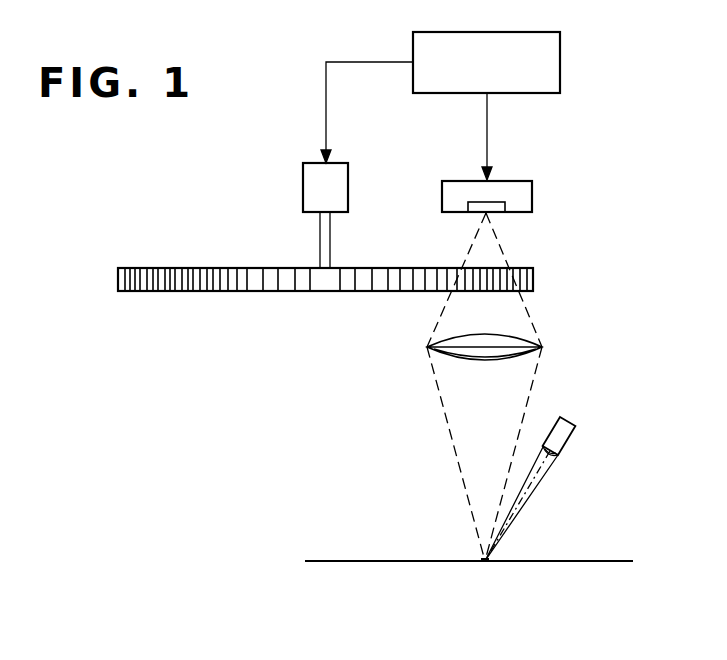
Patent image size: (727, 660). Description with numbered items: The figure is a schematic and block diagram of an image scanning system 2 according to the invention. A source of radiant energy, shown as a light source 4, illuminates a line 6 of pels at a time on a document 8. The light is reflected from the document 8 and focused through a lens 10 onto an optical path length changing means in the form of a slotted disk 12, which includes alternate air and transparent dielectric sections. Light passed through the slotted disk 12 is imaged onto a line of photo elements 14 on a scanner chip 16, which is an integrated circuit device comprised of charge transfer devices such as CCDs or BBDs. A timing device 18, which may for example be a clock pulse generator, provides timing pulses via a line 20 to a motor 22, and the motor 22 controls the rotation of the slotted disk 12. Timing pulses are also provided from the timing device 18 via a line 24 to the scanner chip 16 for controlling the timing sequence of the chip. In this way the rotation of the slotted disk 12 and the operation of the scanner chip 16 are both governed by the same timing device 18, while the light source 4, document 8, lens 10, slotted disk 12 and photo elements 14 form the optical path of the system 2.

The image scanning system 2 is at (566, 294).
The light source 4 is at (566, 418).
The line of pels 6 is at (482, 558).
The document 8 is at (594, 561).
The lens 10 is at (477, 361).
The slotted disk 12 is at (160, 268).
The line of photo elements 14 is at (498, 211).
The scanner chip 16 is at (532, 193).
The timing device 18 is at (560, 62).
The line 20 is at (326, 103).
The motor 22 is at (303, 190).
The line 24 is at (487, 128).